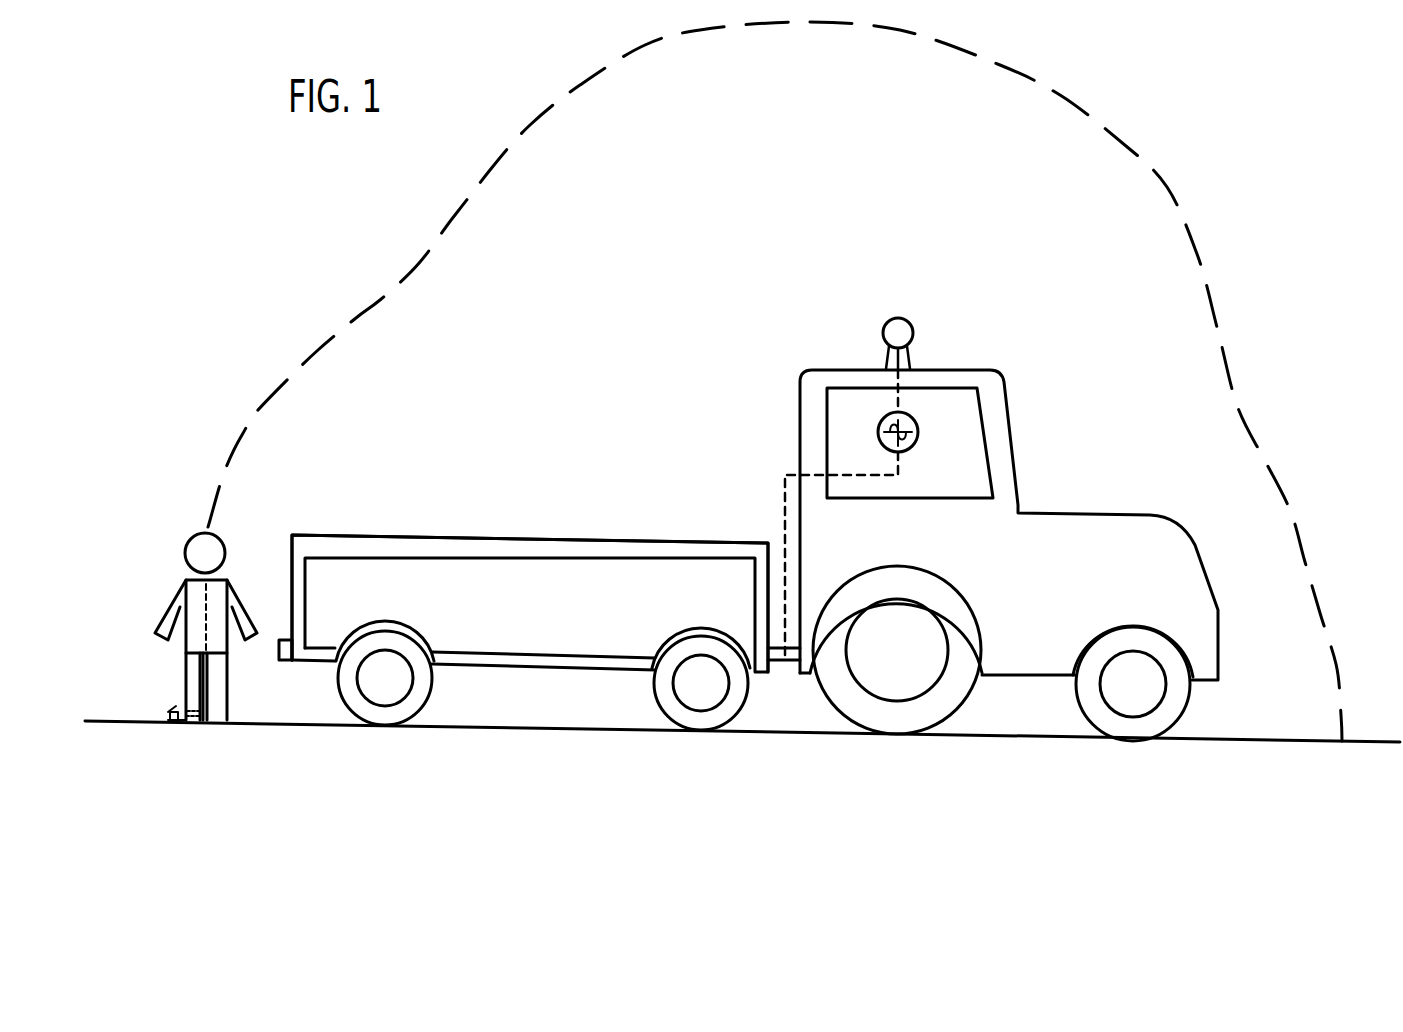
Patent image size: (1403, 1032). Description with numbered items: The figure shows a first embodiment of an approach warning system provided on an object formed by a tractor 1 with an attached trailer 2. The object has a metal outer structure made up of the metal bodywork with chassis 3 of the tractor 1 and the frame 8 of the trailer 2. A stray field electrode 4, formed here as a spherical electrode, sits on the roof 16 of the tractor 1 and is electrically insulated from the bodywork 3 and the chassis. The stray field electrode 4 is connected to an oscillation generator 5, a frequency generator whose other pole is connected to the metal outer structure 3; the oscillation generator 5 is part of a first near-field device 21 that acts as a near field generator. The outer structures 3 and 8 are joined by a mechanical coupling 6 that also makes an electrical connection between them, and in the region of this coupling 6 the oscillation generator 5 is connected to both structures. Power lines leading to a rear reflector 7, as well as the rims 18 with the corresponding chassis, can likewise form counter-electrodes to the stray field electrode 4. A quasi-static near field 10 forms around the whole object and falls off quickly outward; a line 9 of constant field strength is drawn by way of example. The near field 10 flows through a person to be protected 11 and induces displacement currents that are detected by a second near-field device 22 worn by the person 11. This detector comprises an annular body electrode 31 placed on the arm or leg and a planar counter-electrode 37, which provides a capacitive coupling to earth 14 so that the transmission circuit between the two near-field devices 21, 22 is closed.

The tractor 1 is at (980, 524).
The trailer 2 is at (522, 585).
The metal outer structure 3 is at (1055, 611).
The stray field electrode 4 is at (912, 333).
The oscillation generator 5 is at (920, 442).
The mechanical coupling 6 is at (790, 665).
The rear reflector 7 is at (284, 660).
The frame 8 is at (568, 664).
The line of constant field strength 9 is at (634, 54).
The near field 10 is at (558, 311).
The person to be protected 11 is at (180, 597).
The earth 14 is at (397, 786).
The roof 16 is at (975, 378).
The rims 18 is at (715, 699).
The first near-field device 21 is at (860, 423).
The second near-field device 22 is at (165, 690).
The body electrode 31 is at (194, 721).
The counter-electrode 37 is at (172, 720).